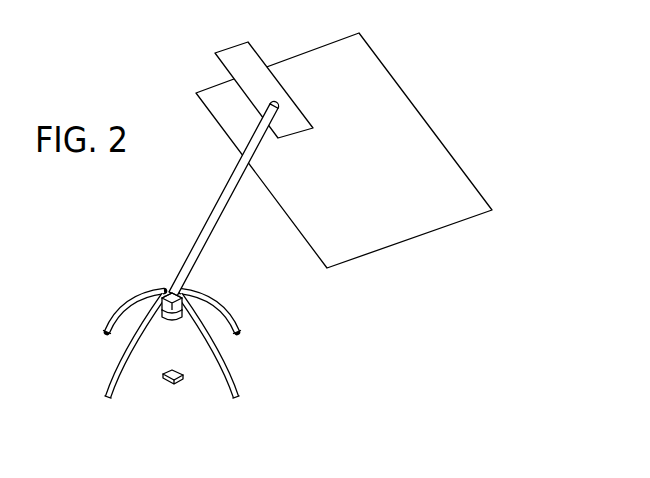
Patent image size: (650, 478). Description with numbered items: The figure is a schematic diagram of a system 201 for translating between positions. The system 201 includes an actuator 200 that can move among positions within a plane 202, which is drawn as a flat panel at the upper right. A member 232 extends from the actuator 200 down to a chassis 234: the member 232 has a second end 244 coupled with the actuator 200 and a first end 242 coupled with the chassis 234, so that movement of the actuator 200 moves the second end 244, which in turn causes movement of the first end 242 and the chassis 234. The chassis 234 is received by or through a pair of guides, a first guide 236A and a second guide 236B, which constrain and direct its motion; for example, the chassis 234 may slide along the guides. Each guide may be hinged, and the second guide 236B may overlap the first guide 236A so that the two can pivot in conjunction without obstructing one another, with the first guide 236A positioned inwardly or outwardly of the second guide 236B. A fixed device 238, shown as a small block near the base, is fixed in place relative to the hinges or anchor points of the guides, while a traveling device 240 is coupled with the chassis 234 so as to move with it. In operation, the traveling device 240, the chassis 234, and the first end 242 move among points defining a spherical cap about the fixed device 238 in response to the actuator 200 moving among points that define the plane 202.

The actuator 200 is at (248, 53).
The system 201 is at (472, 98).
The plane 202 is at (385, 67).
The member 232 is at (205, 217).
The chassis 234 is at (163, 293).
The first guide 236A is at (110, 398).
The second guide 236B is at (240, 392).
The fixed device 238 is at (176, 384).
The traveling device 240 is at (162, 311).
The first end 242 is at (179, 283).
The second end 244 is at (273, 106).